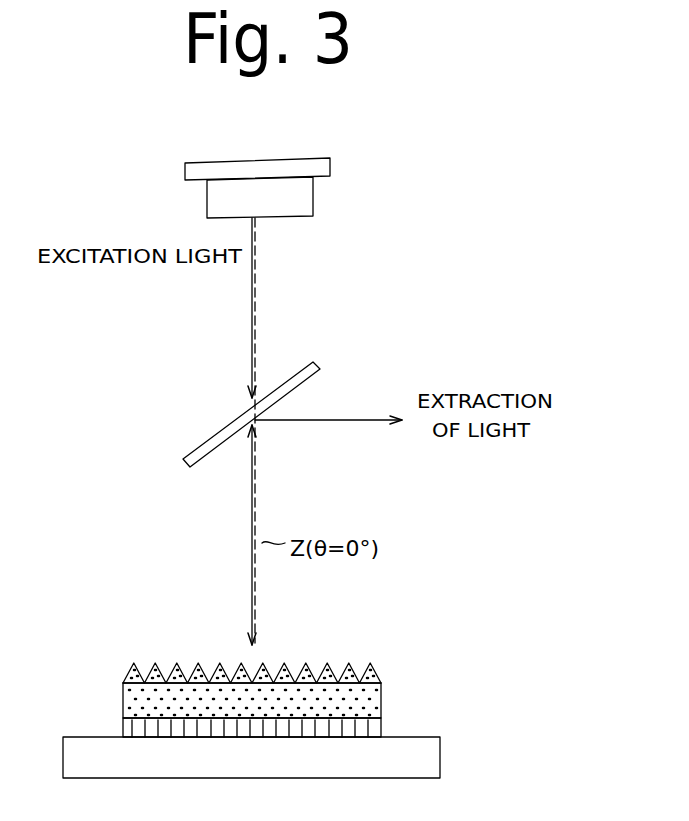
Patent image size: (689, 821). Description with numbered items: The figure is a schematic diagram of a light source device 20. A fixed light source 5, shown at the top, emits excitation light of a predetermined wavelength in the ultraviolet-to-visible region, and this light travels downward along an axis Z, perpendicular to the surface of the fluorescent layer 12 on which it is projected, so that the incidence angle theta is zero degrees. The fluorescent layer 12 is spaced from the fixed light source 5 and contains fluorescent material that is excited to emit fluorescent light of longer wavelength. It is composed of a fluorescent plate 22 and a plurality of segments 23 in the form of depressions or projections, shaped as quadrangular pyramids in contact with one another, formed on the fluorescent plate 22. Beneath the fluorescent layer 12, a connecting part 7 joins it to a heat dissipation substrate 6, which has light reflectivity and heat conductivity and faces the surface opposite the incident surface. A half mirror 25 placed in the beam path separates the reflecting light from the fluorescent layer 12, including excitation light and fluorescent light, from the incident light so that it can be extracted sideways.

The fixed light source 5 is at (330, 163).
The light source device 20 is at (497, 274).
The half mirror 25 is at (317, 364).
The segments in the form of depressions or projections 23 is at (381, 673).
The fluorescent plate 22 is at (381, 701).
The fluorescent layer 12 is at (317, 689).
The connecting part 7 is at (372, 727).
The heat dissipation substrate 6 is at (433, 757).